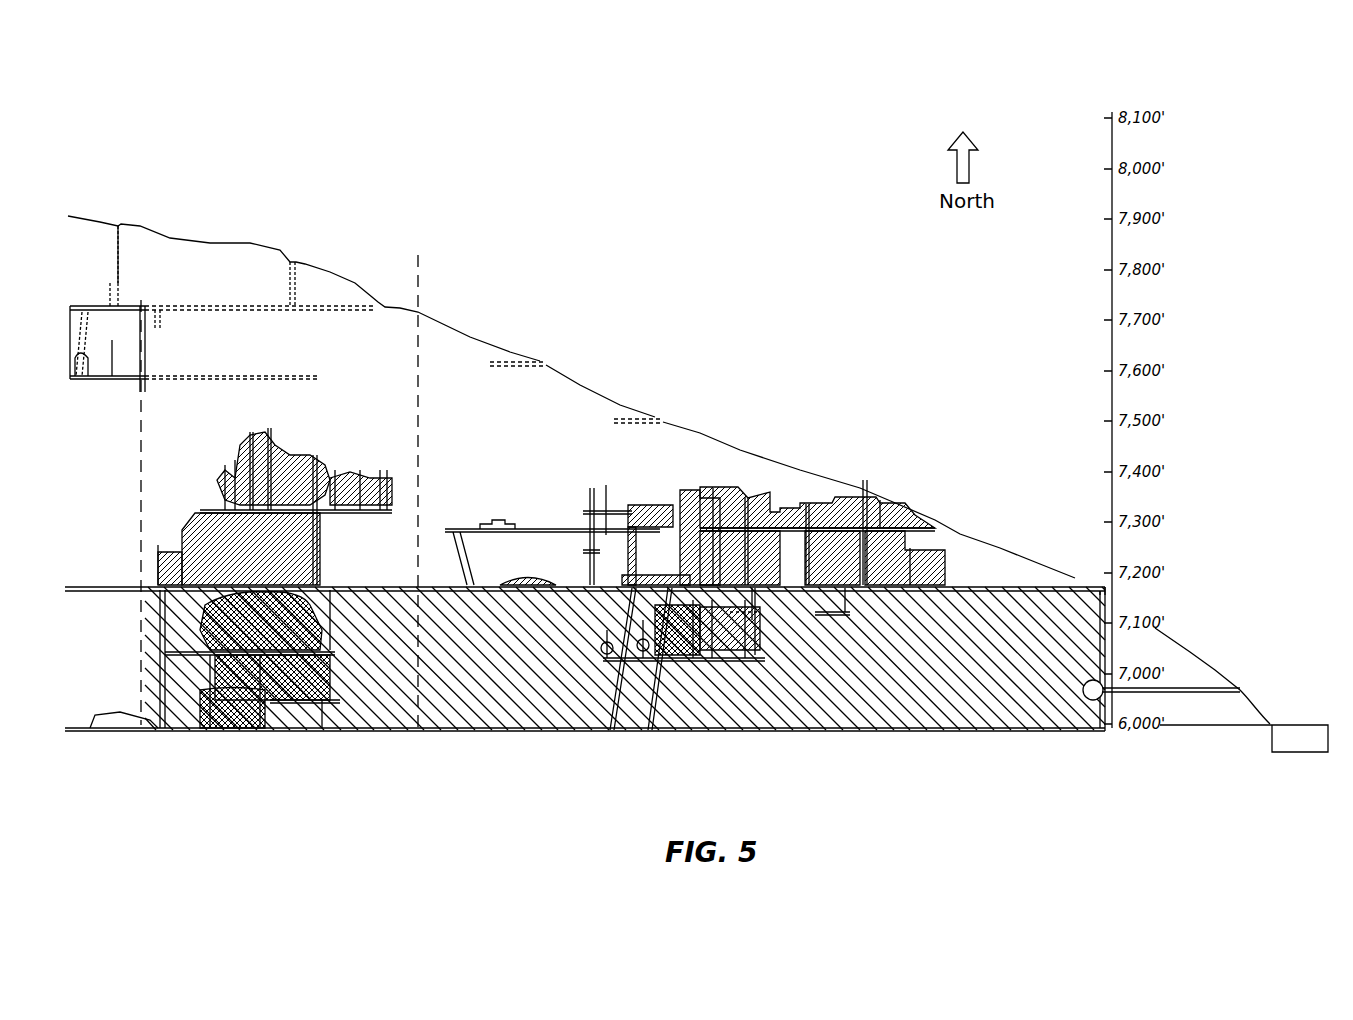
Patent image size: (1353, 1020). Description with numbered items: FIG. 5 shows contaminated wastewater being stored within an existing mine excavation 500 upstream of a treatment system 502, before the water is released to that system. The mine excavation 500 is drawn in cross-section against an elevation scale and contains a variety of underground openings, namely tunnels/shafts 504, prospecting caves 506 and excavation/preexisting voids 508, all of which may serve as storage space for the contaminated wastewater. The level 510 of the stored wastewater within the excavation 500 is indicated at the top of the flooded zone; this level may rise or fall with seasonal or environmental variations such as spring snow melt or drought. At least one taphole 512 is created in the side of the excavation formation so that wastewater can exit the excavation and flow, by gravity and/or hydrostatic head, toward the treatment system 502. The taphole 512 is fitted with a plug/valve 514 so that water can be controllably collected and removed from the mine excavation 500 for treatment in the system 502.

The existing mine excavation 500 is at (676, 250).
The treatment system 502 is at (1298, 752).
The tunnels/shafts 504 is at (863, 484).
The prospecting caves 506 is at (546, 363).
The excavation/preexisting voids 508 is at (891, 502).
The level of the contaminated wastewater 510 is at (1118, 593).
The taphole 512 is at (1243, 690).
The plug/valve 514 is at (1088, 680).